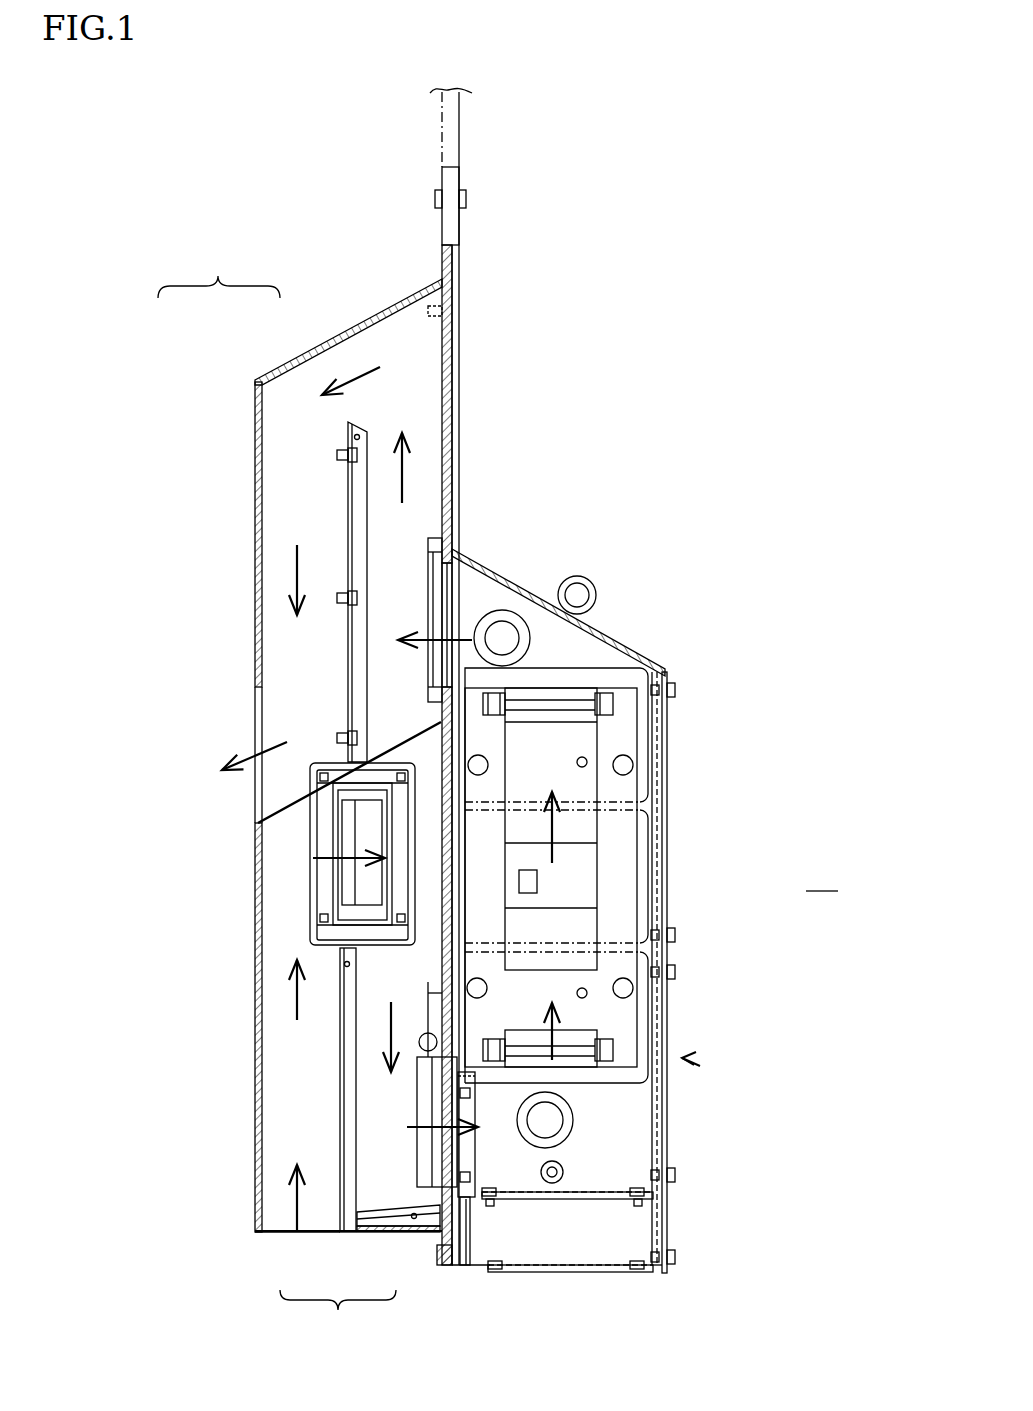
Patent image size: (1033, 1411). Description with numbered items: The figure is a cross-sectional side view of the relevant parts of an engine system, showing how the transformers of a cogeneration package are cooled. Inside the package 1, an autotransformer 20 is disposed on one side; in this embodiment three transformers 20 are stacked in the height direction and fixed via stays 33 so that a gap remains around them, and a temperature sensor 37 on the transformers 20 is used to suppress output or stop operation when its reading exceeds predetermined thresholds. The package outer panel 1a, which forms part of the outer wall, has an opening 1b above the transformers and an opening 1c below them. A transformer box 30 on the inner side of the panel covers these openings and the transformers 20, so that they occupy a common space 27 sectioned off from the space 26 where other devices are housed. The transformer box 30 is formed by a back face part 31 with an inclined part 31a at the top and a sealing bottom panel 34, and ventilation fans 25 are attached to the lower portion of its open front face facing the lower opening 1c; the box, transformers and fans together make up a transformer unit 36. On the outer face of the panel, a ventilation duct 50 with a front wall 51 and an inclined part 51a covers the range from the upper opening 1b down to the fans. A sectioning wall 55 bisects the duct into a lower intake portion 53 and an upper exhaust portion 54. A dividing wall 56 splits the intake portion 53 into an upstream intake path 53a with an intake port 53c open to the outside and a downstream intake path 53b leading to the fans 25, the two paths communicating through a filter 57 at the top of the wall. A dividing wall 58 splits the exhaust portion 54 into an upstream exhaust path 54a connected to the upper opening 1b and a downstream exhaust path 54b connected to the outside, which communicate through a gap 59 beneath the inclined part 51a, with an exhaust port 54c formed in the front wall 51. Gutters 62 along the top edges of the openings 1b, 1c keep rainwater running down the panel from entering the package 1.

The package 1 is at (463, 121).
The package outer panel 1a is at (453, 225).
The opening above the transformer 1b is at (450, 600).
The opening below the transformer 1c is at (455, 1155).
The autotransformer 20 is at (563, 740).
The ventilation fan 25 is at (435, 1160).
The space 26 is at (822, 875).
The common space 27 is at (562, 648).
The transformer box 30 is at (665, 758).
The back face part 31 is at (665, 858).
The inclined part 31a is at (623, 642).
The stay 33 is at (618, 842).
The sealing bottom panel 34 is at (600, 1200).
The transformer unit 36 is at (700, 1066).
The temperature sensor 37 is at (537, 880).
The ventilation duct 50 is at (255, 960).
The front wall 51 is at (255, 530).
The inclined part 51a is at (348, 332).
The intake portion 53 is at (338, 1317).
The upstream intake path 53a is at (317, 1217).
The downstream intake path 53b is at (387, 1182).
The intake port 53c is at (272, 1220).
The exhaust portion 54 is at (219, 269).
The upstream exhaust path 54a is at (385, 502).
The downstream exhaust path 54b is at (295, 498).
The exhaust port 54c is at (255, 733).
The sectioning wall 55 is at (285, 805).
The dividing wall 56 is at (335, 1095).
The filter 57 is at (310, 862).
The dividing wall 58 is at (348, 637).
The gap 59 is at (352, 401).
The gutter 62 is at (435, 540).